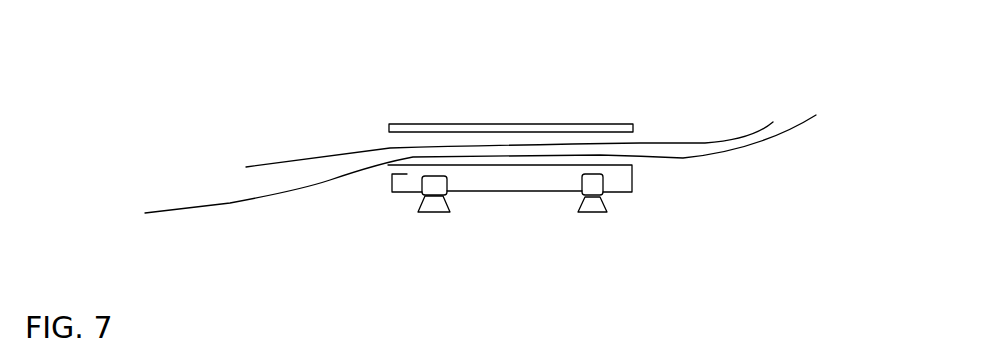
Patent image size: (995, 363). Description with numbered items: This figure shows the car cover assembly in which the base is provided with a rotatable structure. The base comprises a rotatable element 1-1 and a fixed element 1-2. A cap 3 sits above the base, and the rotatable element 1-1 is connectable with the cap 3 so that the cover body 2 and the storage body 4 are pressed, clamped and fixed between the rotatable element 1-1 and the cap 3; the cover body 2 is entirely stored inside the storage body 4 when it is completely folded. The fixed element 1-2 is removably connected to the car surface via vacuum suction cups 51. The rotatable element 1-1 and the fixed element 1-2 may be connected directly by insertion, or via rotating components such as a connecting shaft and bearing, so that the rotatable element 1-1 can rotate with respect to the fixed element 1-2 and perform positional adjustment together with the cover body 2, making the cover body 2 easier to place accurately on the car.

The cap 3 is at (500, 125).
The cover body 2 is at (247, 167).
The storage body 4 is at (145, 213).
The rotatable element 1-1 is at (407, 174).
The fixed element 1-2 is at (603, 183).
The vacuum suction cups 51 is at (592, 212).